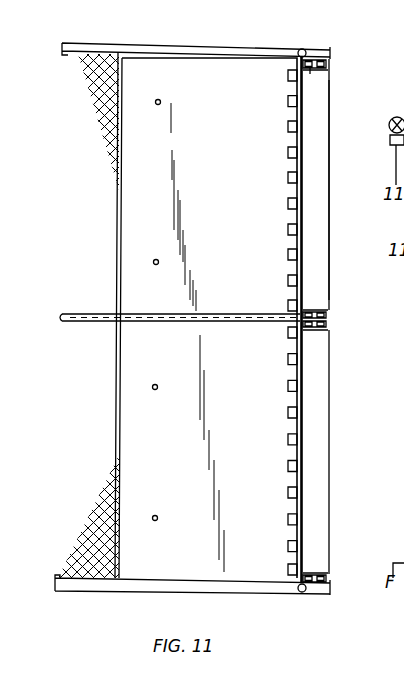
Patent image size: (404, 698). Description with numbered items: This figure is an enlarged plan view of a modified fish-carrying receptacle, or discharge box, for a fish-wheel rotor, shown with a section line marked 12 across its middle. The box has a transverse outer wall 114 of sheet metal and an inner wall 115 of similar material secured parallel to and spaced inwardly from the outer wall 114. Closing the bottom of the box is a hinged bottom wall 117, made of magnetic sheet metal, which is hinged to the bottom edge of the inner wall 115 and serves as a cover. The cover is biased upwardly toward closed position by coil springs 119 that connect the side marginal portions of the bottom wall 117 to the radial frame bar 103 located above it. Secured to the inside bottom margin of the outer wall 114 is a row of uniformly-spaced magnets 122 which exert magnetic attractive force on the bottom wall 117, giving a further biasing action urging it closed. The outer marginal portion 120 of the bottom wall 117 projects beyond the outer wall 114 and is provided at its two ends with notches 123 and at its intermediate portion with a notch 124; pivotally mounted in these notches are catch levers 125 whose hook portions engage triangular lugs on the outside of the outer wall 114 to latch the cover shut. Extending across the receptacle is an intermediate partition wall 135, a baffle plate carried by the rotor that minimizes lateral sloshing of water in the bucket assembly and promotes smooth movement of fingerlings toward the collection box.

The radial rod element 103 is at (147, 51).
The inner wall 115 is at (122, 414).
The bottom wall 117 is at (240, 158).
The coil spring 119 is at (157, 106).
The outer wall 114 is at (305, 166).
The outer marginal portion 120 is at (320, 116).
The magnets 122 is at (288, 230).
The notches 123 is at (307, 64).
The catch levers 125 is at (310, 70).
The notch 124 is at (306, 327).
The intermediate partition wall 135 is at (104, 285).
The section line 12 is at (103, 327).